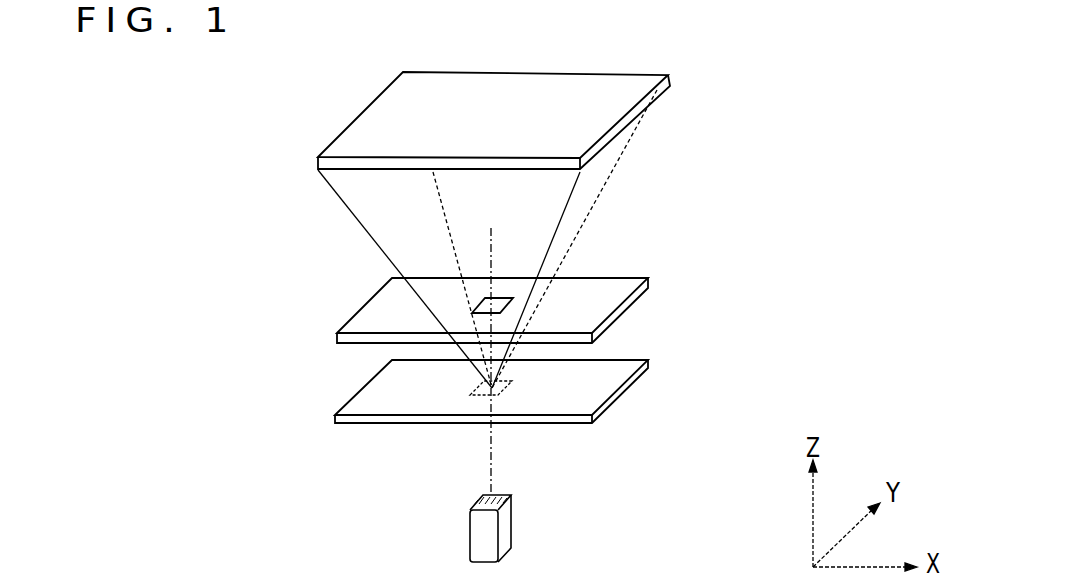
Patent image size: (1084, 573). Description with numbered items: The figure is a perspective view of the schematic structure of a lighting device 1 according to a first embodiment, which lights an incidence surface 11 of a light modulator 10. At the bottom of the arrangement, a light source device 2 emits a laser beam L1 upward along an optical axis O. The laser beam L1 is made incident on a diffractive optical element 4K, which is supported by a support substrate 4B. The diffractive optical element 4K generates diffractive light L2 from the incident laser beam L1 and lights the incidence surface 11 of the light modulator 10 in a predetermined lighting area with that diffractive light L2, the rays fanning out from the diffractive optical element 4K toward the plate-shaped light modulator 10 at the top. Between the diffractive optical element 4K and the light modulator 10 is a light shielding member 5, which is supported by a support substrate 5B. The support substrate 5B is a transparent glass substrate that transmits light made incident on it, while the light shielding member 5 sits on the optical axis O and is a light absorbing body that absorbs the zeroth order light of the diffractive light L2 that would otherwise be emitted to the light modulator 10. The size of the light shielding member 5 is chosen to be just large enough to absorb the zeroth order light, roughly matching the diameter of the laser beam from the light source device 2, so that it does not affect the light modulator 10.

The lighting device 1 is at (760, 270).
The light modulator 10 is at (667, 93).
The incidence surface 11 is at (637, 123).
The diffractive light L2 is at (593, 215).
The optical axis O is at (491, 245).
The light shielding member 5 is at (502, 297).
The support substrate 5B is at (640, 302).
The support substrate 4B is at (635, 383).
The diffractive optical element 4K is at (515, 362).
The laser beam L1 is at (495, 462).
The light source device 2 is at (512, 528).